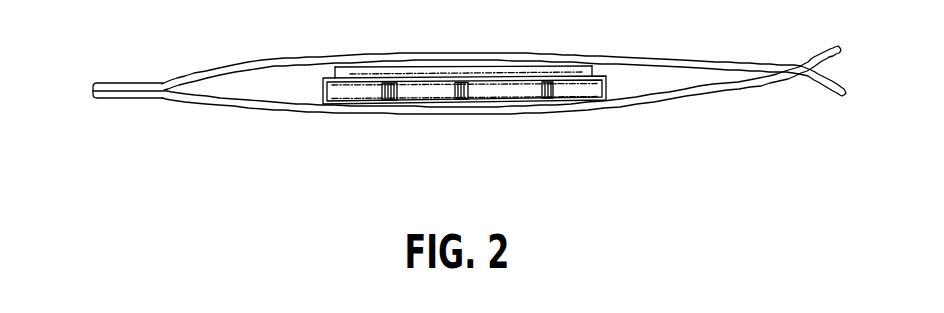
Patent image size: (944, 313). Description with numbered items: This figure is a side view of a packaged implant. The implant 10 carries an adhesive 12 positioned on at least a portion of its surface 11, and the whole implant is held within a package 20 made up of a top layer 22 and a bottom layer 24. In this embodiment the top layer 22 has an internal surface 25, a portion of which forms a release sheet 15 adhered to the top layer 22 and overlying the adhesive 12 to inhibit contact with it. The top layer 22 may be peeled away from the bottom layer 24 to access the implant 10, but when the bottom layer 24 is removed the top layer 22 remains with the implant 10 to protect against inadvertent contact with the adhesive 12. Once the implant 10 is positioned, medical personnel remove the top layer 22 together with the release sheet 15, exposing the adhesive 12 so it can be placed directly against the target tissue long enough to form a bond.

The implant 10 is at (341, 94).
The surface 11 is at (603, 79).
The adhesive 12 is at (486, 68).
The release sheet 15 is at (383, 66).
The package 20 is at (93, 90).
The top layer 22 is at (800, 67).
The bottom layer 24 is at (797, 82).
The internal surface 25 is at (262, 64).